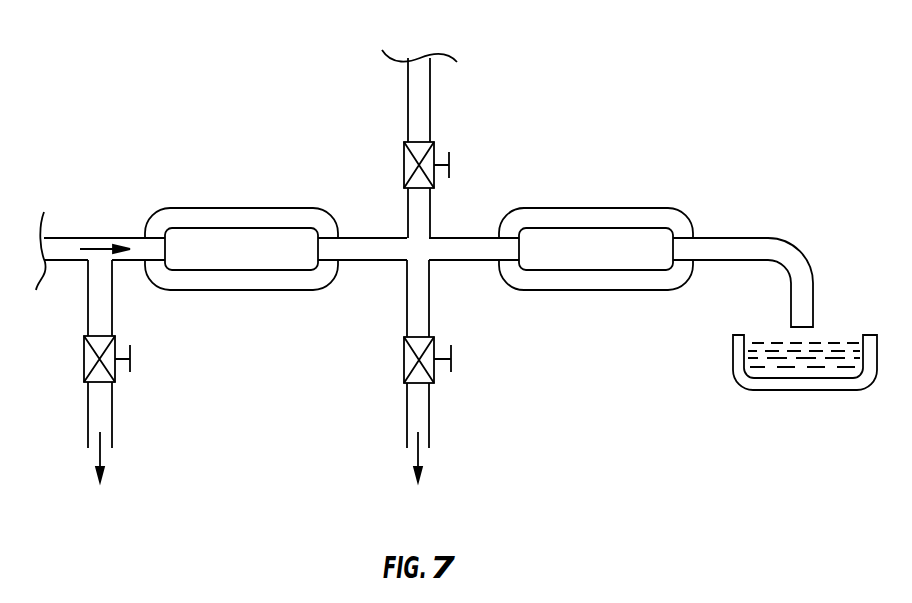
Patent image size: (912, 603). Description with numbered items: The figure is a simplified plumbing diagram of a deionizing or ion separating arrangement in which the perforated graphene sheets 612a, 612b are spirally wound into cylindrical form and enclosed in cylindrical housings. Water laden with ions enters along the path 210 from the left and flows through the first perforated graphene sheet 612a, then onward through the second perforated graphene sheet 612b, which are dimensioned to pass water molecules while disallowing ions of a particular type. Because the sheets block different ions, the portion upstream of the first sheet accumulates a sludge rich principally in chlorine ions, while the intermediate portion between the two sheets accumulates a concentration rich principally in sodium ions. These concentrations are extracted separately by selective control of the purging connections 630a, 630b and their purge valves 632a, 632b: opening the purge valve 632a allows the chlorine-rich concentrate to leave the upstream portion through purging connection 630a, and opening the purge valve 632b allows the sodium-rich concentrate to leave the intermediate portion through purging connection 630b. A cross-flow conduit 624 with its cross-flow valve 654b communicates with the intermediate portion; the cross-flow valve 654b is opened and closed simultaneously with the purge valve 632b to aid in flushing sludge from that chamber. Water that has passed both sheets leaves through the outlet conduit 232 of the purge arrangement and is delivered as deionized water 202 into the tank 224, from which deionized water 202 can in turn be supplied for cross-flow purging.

The path for the flow of water 210 is at (63, 260).
The perforated graphene sheet 612a is at (263, 263).
The perforated graphene sheet 612b is at (618, 263).
The cross-flow conduit 624 is at (375, 238).
The cross-flow valve 654b is at (434, 146).
The purging connection 630a is at (111, 303).
The purge valve 632a is at (84, 358).
The purging connection 630b is at (407, 297).
The purge valve 632b is at (404, 360).
The purge arrangement 232 is at (744, 244).
The deionized water 202 is at (778, 352).
The tank 224 is at (778, 390).